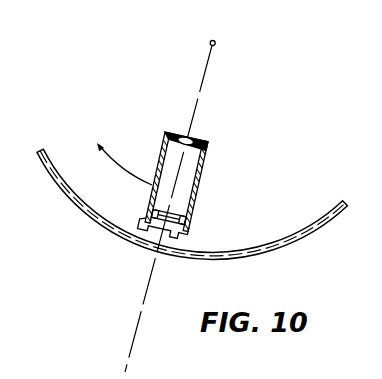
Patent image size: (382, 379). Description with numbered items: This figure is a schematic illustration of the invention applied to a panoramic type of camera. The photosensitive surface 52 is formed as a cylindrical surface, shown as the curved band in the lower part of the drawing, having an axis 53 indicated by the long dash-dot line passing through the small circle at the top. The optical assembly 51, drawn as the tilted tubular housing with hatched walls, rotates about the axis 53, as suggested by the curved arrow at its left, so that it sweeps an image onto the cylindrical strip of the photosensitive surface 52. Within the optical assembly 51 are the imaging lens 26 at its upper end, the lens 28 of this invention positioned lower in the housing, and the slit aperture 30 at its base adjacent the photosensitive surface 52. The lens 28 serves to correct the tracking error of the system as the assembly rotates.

The imaging lens 26 is at (206, 134).
The lens 28 is at (163, 216).
The slit aperture 30 is at (147, 233).
The optical assembly 51 is at (206, 172).
The photosensitive surface 52 is at (287, 236).
The axis 53 is at (215, 41).